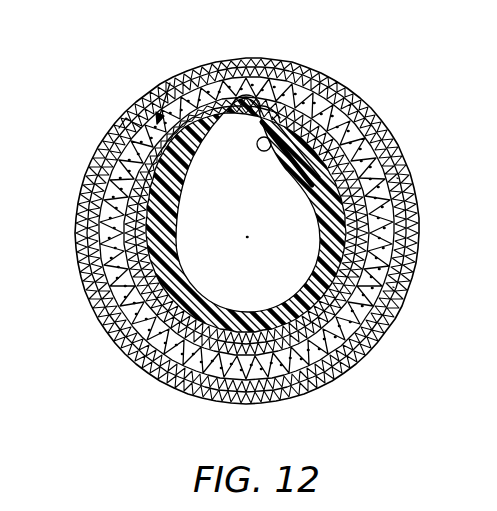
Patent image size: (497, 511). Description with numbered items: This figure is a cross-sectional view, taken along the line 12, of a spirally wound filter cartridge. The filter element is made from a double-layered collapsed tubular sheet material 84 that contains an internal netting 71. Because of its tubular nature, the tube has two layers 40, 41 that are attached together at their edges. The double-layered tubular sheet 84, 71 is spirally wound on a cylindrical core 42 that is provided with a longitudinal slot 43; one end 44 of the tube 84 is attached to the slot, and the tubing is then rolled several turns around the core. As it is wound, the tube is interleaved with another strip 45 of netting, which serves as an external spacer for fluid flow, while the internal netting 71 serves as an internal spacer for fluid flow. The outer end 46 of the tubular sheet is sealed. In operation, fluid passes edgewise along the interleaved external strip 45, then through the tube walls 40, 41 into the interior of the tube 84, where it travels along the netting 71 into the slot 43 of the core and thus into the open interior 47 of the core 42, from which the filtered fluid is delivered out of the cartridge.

The cross-sectional view line 12 is at (488, 80).
The tube layer 40 is at (88, 172).
The tube layer 41 is at (97, 235).
The cylindrical core 42 is at (320, 245).
The longitudinal slot 43 is at (247, 200).
The end of the tube 44 is at (288, 100).
The strip of netting 45 is at (397, 178).
The outer end of the tubular sheet 46 is at (127, 118).
The open interior of core 47 is at (234, 243).
The internal netting 71 is at (393, 287).
The tubular sheet material 84 is at (396, 139).